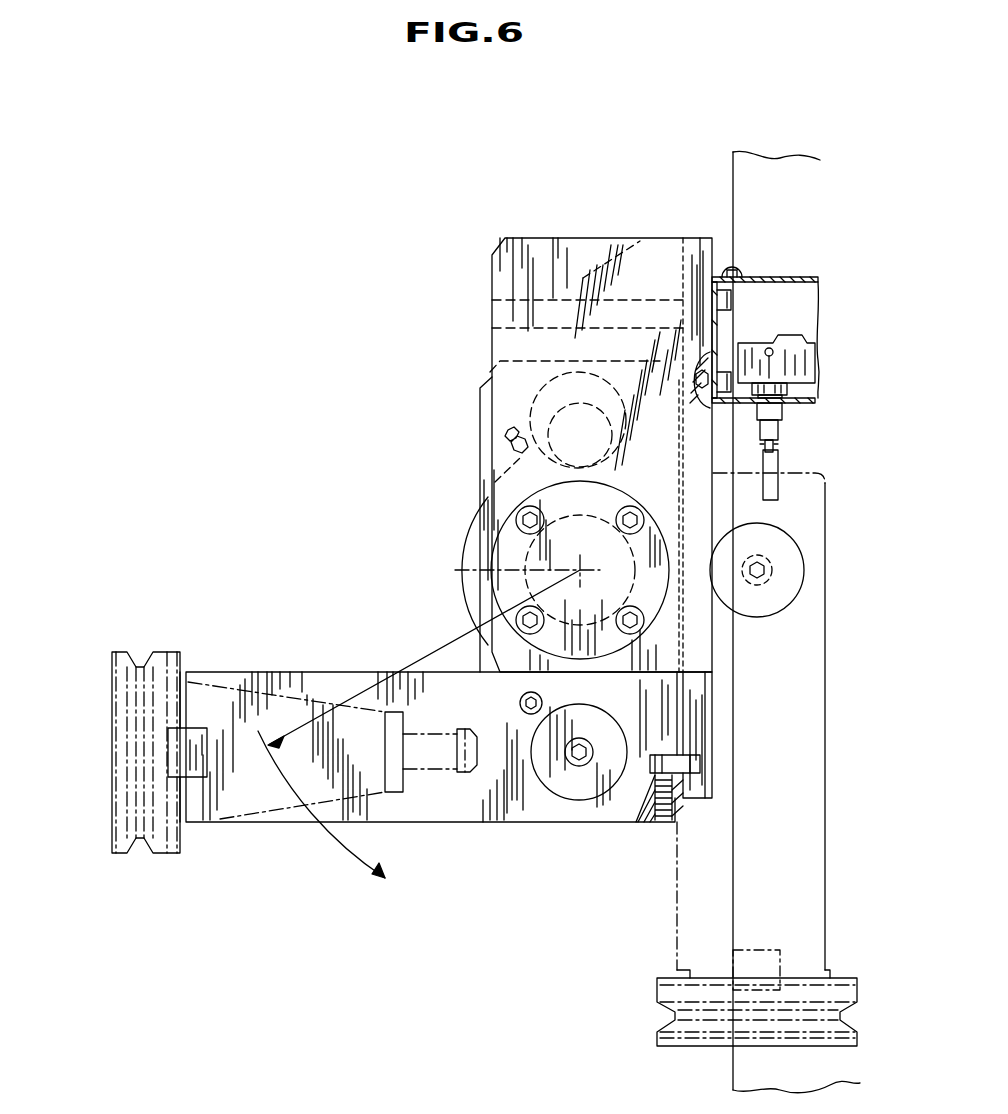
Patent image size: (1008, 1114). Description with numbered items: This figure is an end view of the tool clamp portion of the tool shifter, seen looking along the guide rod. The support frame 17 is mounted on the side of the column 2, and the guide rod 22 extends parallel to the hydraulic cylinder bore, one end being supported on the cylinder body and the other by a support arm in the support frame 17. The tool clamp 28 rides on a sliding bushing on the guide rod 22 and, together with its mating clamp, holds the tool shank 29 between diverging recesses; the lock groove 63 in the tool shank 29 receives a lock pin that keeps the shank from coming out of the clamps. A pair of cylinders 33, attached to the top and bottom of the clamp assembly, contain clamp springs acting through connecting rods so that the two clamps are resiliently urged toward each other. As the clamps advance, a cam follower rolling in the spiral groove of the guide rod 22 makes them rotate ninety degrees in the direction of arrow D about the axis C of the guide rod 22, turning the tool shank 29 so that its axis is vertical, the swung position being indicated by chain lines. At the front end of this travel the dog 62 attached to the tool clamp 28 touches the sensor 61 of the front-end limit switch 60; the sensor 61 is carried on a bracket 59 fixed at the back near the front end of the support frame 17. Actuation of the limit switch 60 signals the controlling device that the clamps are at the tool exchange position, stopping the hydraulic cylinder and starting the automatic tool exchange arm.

The column 2 is at (748, 172).
The support frame 17 is at (698, 265).
The guide rod 22 is at (545, 580).
The tool clamp 28 is at (265, 822).
The tool shank 29 is at (140, 740).
The cylinder 33 is at (558, 388).
The bracket 59 is at (785, 302).
The front-end limit switch 60 is at (790, 355).
The sensor 61 is at (783, 440).
The dog 62 is at (778, 490).
The lock groove 63 is at (440, 770).
The axis of the guide rod C is at (580, 570).
The direction of rotation (arrow D) D is at (419, 735).